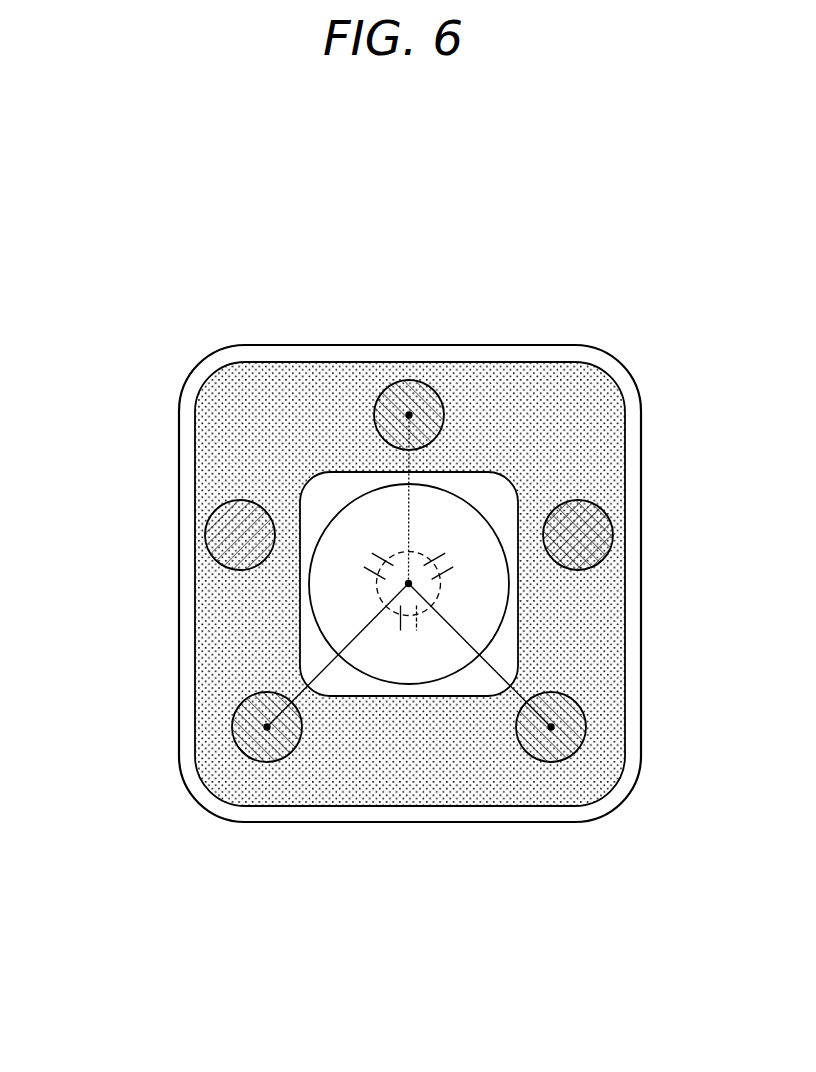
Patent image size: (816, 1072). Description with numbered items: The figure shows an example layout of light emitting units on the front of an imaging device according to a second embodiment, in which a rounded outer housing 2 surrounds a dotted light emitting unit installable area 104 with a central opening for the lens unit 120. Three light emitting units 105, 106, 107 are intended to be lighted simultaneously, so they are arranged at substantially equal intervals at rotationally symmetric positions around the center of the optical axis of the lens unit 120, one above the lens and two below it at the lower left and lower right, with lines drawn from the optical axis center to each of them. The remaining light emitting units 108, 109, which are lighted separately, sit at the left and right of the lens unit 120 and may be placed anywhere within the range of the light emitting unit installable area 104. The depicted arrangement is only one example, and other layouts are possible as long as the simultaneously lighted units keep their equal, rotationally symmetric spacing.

The housing 2 is at (562, 823).
The light emitting unit installable area 104 is at (289, 393).
The light emitting unit 105 is at (430, 396).
The light emitting unit 106 is at (233, 732).
The light emitting unit 107 is at (586, 727).
The light emitting unit 108 is at (205, 537).
The light emitting unit 109 is at (613, 532).
The lens unit 120 is at (481, 508).